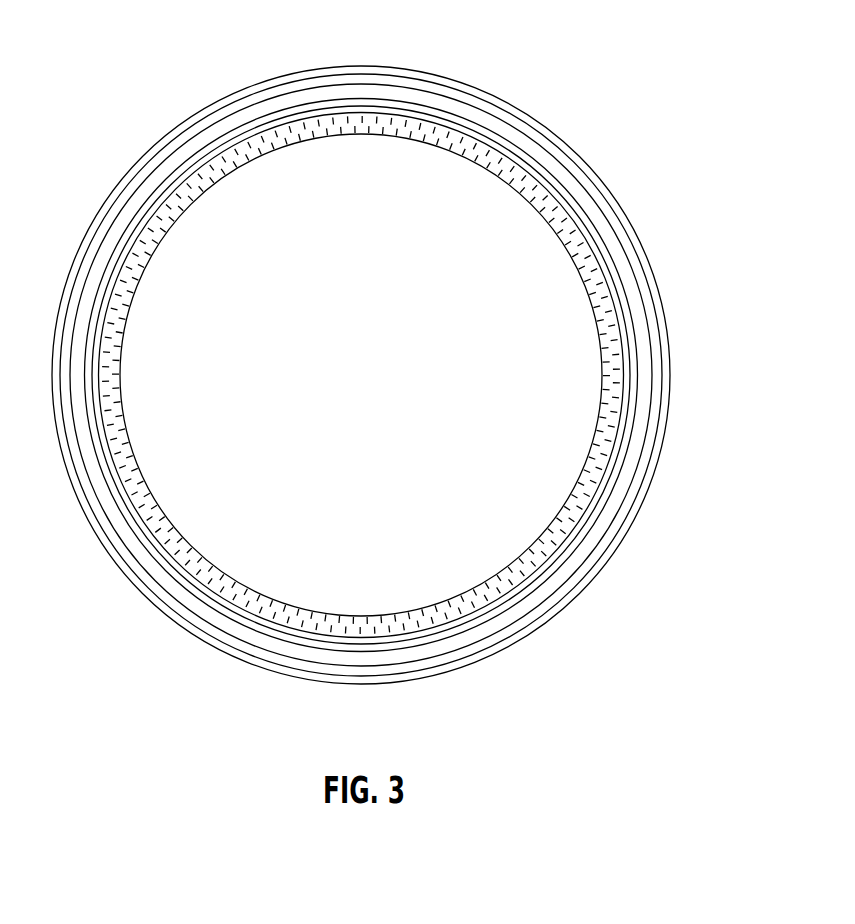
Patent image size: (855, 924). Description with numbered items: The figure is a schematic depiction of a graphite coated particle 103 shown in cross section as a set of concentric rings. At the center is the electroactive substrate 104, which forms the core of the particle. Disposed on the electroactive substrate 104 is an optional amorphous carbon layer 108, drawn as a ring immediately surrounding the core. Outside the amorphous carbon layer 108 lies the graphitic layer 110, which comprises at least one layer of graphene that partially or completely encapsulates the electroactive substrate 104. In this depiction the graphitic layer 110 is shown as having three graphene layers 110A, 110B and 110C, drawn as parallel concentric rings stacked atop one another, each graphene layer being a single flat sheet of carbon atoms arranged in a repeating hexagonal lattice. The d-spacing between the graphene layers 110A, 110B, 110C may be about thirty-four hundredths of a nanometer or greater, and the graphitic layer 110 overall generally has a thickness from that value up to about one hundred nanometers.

The graphite coated particle 103 is at (131, 78).
The electroactive substrate 104 is at (547, 485).
The amorphous carbon layer 108 is at (467, 145).
The graphitic layer 110 is at (590, 167).
The graphene layer 110A is at (632, 310).
The graphene layer 110B is at (655, 373).
The graphene layer 110C is at (660, 428).